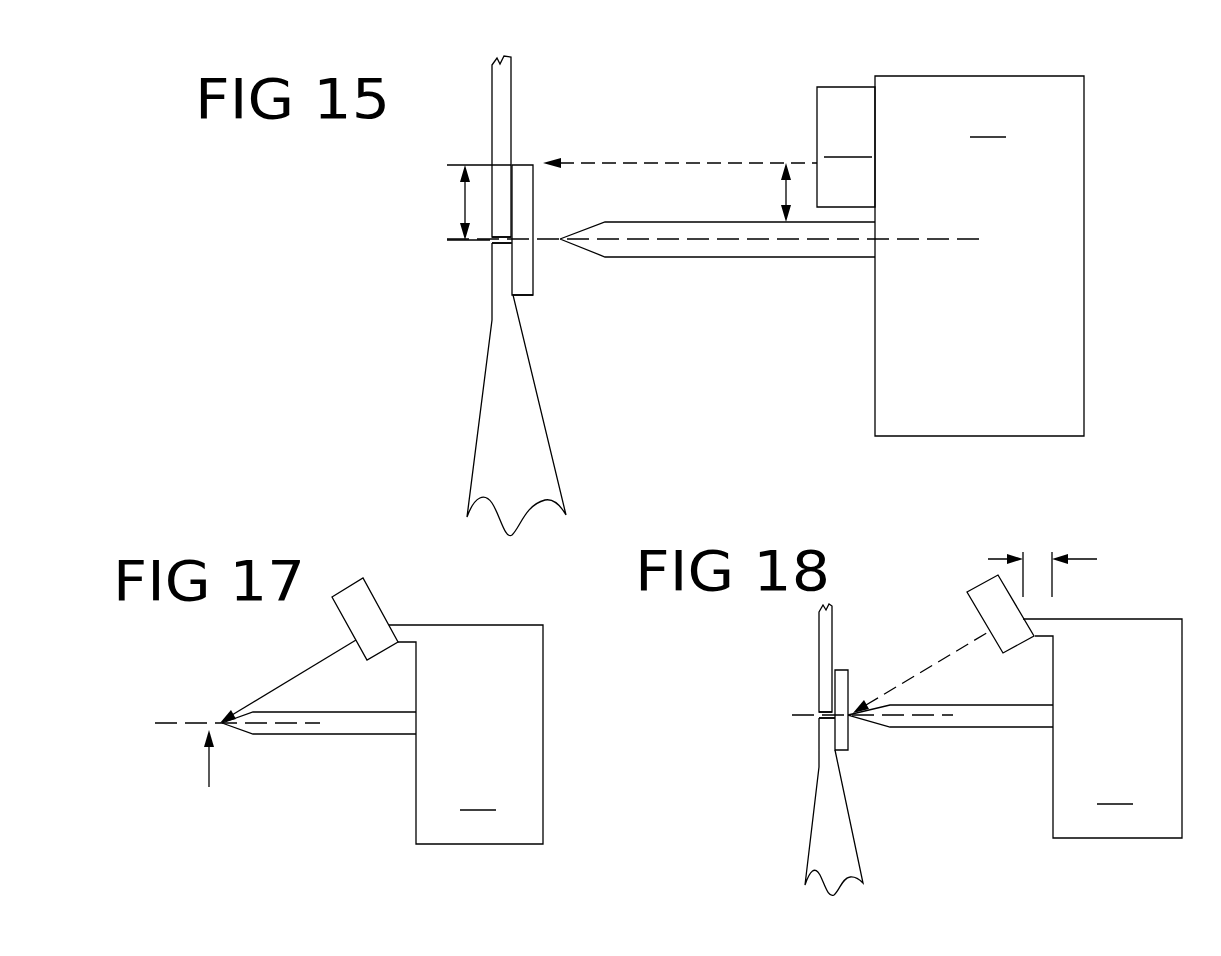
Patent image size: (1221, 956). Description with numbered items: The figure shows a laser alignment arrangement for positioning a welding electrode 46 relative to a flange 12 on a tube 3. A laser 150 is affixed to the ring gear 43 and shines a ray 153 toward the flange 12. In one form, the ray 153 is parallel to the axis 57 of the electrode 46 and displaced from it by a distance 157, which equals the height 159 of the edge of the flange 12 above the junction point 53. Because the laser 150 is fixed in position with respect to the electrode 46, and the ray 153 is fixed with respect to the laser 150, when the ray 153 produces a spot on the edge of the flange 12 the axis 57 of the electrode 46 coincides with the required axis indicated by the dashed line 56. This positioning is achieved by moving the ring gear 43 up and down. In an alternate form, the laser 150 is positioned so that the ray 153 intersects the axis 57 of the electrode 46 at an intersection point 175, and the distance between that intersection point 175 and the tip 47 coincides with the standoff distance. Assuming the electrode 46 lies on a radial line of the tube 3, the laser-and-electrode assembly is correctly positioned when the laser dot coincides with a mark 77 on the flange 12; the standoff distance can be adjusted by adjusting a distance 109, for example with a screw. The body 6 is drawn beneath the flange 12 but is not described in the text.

In FIG. 15, the tube 3 is at (492, 150).
In FIG. 18, the tube 3 is at (819, 668).
In FIG. 15, the substrate body 6 is at (545, 425).
In FIG. 18, the substrate body 6 is at (853, 833).
In FIG. 15, the flange 12 is at (533, 263).
In FIG. 18, the flange 12 is at (848, 730).
In FIG. 15, the ring gear 43 is at (979, 256).
In FIG. 17, the ring gear 43 is at (466, 734).
In FIG. 18, the ring gear 43 is at (1102, 728).
In FIG. 15, the electrode 46 is at (747, 222).
In FIG. 17, the electrode 46 is at (392, 712).
In FIG. 18, the electrode 46 is at (1027, 705).
In FIG. 17, the tip 47 is at (228, 727).
In FIG. 15, the junction point 53 is at (479, 248).
In FIG. 18, the junction point 53 is at (810, 722).
In FIG. 15, the dashed line axis 56 is at (640, 240).
In FIG. 15, the axis of the electrode 57 is at (893, 240).
In FIG. 17, the axis of the electrode 57 is at (275, 727).
In FIG. 18, the axis of the electrode 57 is at (910, 720).
In FIG. 15, the mark 77 is at (521, 165).
In FIG. 18, the mark 77 is at (840, 712).
In FIG. 18, the distance 109 is at (1097, 559).
In FIG. 15, the laser 150 is at (847, 147).
In FIG. 17, the laser 150 is at (377, 600).
In FIG. 18, the laser 150 is at (968, 620).
In FIG. 15, the ray 153 is at (641, 163).
In FIG. 17, the ray 153 is at (252, 695).
In FIG. 18, the ray 153 is at (921, 672).
In FIG. 15, the distance 157 is at (786, 168).
In FIG. 15, the height 159 is at (466, 205).
In FIG. 17, the intersection point 175 is at (198, 777).